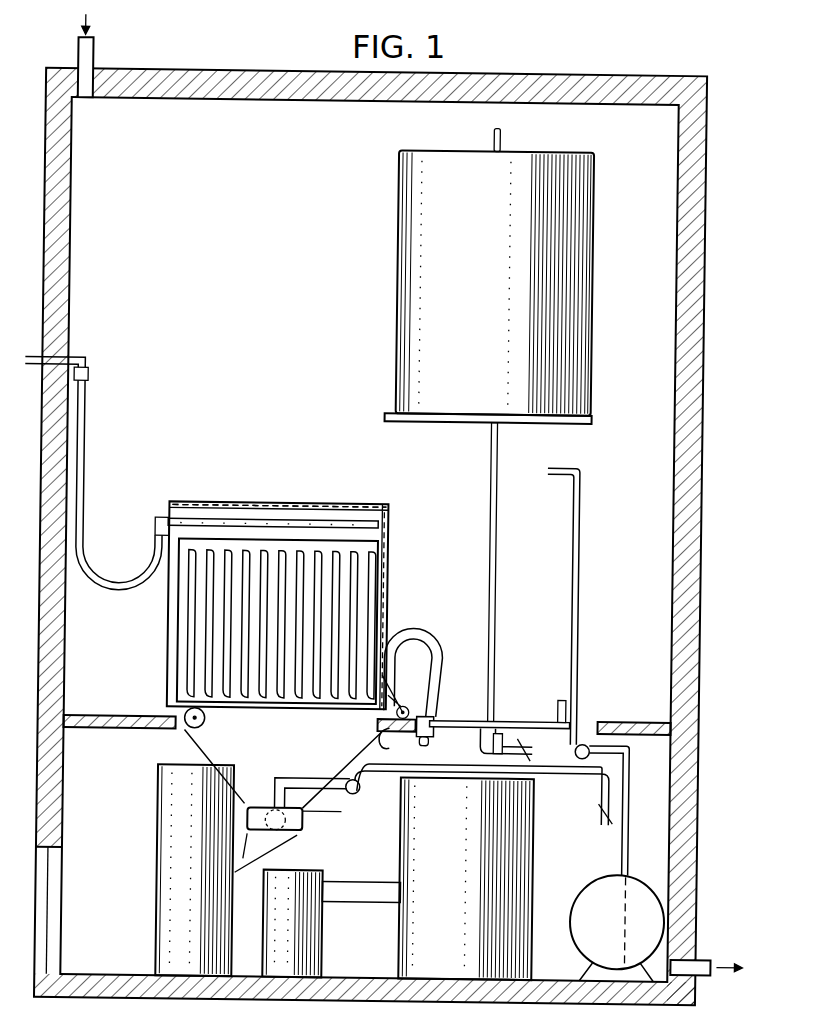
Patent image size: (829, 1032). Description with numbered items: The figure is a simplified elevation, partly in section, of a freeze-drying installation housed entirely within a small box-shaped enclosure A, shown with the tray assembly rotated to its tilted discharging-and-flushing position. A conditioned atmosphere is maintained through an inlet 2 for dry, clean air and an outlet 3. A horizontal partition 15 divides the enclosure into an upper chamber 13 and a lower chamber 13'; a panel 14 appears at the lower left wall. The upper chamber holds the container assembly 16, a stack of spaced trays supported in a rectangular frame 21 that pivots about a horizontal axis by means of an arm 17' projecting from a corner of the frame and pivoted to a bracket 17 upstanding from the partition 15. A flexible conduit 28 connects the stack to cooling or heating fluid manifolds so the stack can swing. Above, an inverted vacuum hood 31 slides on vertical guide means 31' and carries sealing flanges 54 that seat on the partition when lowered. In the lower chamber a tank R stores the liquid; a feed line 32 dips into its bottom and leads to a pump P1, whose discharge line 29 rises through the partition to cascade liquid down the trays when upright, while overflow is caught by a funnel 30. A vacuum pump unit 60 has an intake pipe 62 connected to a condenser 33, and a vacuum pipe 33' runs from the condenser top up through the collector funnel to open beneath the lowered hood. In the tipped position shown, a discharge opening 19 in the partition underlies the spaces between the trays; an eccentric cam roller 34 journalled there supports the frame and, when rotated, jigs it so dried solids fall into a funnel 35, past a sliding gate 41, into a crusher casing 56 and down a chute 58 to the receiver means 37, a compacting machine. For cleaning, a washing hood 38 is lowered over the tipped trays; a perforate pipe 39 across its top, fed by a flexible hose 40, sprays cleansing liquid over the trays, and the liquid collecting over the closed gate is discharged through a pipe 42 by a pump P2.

The inlet 2 is at (88, 54).
The outlet 3 is at (707, 960).
The upper chamber 13 is at (619, 455).
The lower chamber 13' is at (648, 760).
The access panel 14 is at (55, 907).
The horizontal partition 15 is at (614, 720).
The container assembly 16 is at (167, 633).
The bracket 17 is at (410, 695).
The arm 17' is at (403, 681).
The discharge opening 19 is at (387, 742).
The frame 21 is at (167, 686).
The flexible conduit 28 is at (409, 629).
The discharge line 29 is at (580, 569).
The funnel 30 is at (470, 725).
The vacuum hood 31 is at (519, 271).
The vertical guide means 31' is at (470, 572).
The feed line 32 is at (634, 826).
The condenser 33 is at (489, 878).
The vacuum pipe 33' is at (499, 742).
The eccentric cam roller 34 is at (186, 726).
The funnel 35 is at (228, 793).
The receiver means 37 is at (169, 830).
The washing hood 38 is at (207, 502).
The perforate pipe 39 is at (277, 519).
The flexible hose 40 is at (84, 461).
The sliding gate 41 is at (296, 840).
The pipe 42 is at (317, 792).
The sealing flanges 54 is at (384, 415).
The casing 56 is at (304, 811).
The chute 58 is at (247, 863).
The vacuum pump unit 60 is at (315, 938).
The intake pipe 62 is at (365, 892).
The enclosure A is at (670, 354).
The pump P1 is at (578, 750).
The pump P2 is at (359, 795).
The tank R is at (644, 888).